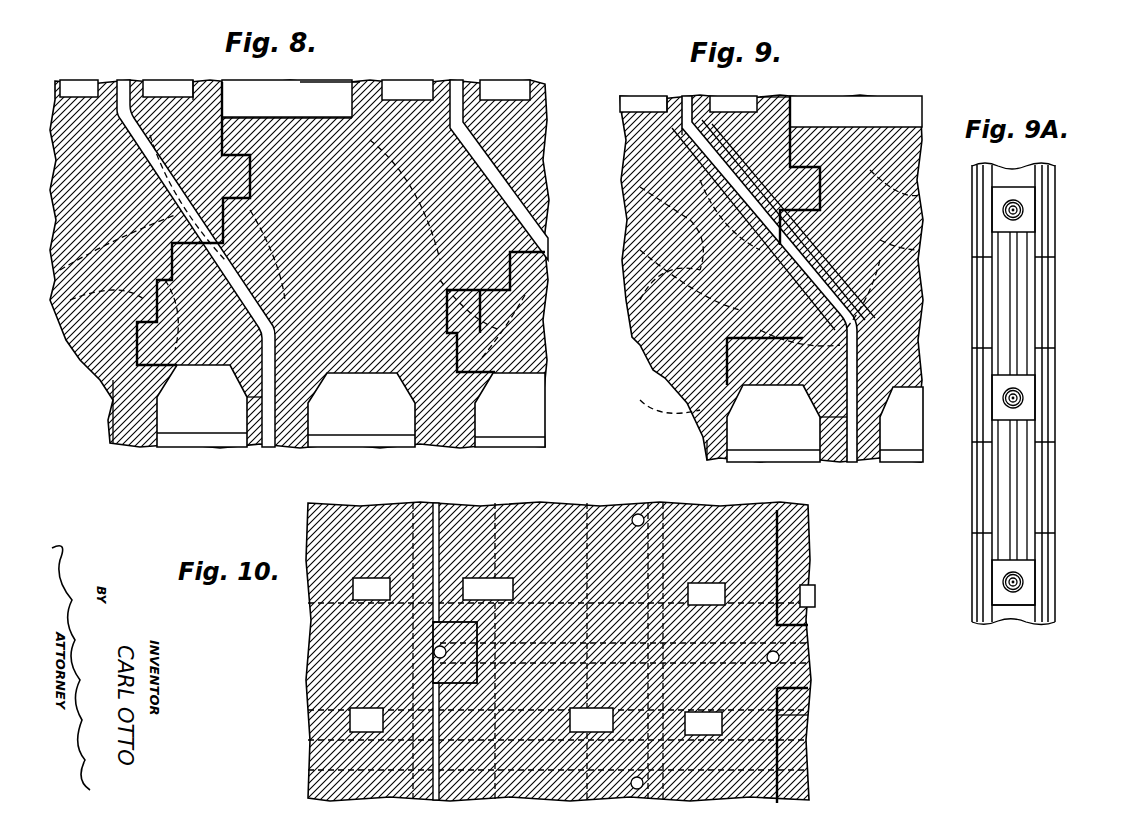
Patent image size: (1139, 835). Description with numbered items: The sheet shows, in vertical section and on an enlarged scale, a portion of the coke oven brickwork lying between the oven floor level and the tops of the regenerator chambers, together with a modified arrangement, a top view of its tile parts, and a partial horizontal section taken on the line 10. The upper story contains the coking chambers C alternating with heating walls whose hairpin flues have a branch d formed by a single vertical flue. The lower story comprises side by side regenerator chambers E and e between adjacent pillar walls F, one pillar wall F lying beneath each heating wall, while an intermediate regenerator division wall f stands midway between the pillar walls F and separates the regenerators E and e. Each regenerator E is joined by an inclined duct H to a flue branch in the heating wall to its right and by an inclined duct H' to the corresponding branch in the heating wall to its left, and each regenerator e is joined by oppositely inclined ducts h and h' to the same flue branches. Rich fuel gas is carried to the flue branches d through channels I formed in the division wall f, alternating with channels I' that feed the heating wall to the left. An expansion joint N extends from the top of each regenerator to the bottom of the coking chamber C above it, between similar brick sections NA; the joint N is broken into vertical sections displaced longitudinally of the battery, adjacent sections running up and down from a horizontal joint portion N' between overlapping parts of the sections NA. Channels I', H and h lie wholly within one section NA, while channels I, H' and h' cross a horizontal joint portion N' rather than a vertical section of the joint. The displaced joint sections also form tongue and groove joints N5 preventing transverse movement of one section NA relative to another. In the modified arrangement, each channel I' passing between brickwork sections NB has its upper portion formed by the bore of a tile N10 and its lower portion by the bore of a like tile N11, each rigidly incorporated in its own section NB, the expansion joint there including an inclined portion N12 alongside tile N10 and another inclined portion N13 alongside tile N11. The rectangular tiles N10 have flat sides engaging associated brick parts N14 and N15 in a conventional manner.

In FIG. 8, the expansion joint N is at (292, 277).
In FIG. 10, the expansion joint N is at (538, 651).
In FIG. 8, the brick section NA is at (208, 95).
In FIG. 10, the brick section NA is at (437, 745).
In FIG. 9, the brickwork section NB is at (860, 125).
In FIG. 8, the horizontal joint portion N' is at (353, 278).
In FIG. 10, the tongue and groove joint N5 is at (446, 672).
In FIG. 9, the tile or hollow body N10 is at (670, 118).
In FIG. 9A, the tile or hollow body N10 is at (1035, 198).
In FIG. 9, the tile or hollow body N11 is at (917, 403).
In FIG. 9, the inclined joint portion N12 is at (905, 172).
In FIG. 9, the inclined joint portion N13 is at (908, 198).
In FIG. 9A, the brick part N14 is at (1048, 272).
In FIG. 9A, the brick part N15 is at (1015, 315).
In FIG. 8, the hairpin flue branch d is at (168, 80).
In FIG. 9, the hairpin flue branch d is at (735, 96).
In FIG. 8, the coking chamber C is at (322, 84).
In FIG. 9, the coking chamber C is at (808, 97).
In FIG. 8, the inclined duct or passage H is at (280, 248).
In FIG. 9, the inclined duct or passage H is at (867, 171).
In FIG. 10, the inclined duct or passage H is at (481, 720).
In FIG. 8, the inclined duct or passage H' is at (173, 397).
In FIG. 9, the inclined duct or passage H' is at (643, 221).
In FIG. 10, the inclined duct or passage H' is at (371, 589).
In FIG. 8, the inclined duct or passage h is at (378, 399).
In FIG. 9, the inclined duct or passage h is at (650, 298).
In FIG. 10, the inclined duct or passage h is at (811, 716).
In FIG. 8, the inclined duct or passage h' is at (386, 254).
In FIG. 9, the inclined duct or passage h' is at (896, 295).
In FIG. 10, the inclined duct or passage h' is at (639, 592).
In FIG. 8, the rich fuel gas channel I is at (500, 170).
In FIG. 9, the rich fuel gas channel I is at (859, 359).
In FIG. 10, the rich fuel gas channel I is at (664, 630).
In FIG. 8, the rich fuel gas channel I' is at (205, 279).
In FIG. 9, the rich fuel gas channel I' is at (772, 296).
In FIG. 9A, the rich fuel gas channel I' is at (1047, 396).
In FIG. 10, the rich fuel gas channel I' is at (556, 653).
In FIG. 8, the regenerator chamber E is at (200, 450).
In FIG. 9, the regenerator chamber E is at (783, 452).
In FIG. 8, the regenerator chamber e is at (356, 441).
In FIG. 9, the regenerator chamber e is at (900, 452).
In FIG. 8, the pillar wall F is at (122, 445).
In FIG. 9, the pillar wall F is at (704, 460).
In FIG. 8, the intermediate regenerator division wall f is at (258, 446).
In FIG. 9, the intermediate regenerator division wall f is at (822, 460).
In FIG. 8, the section line 10 is at (45, 196).